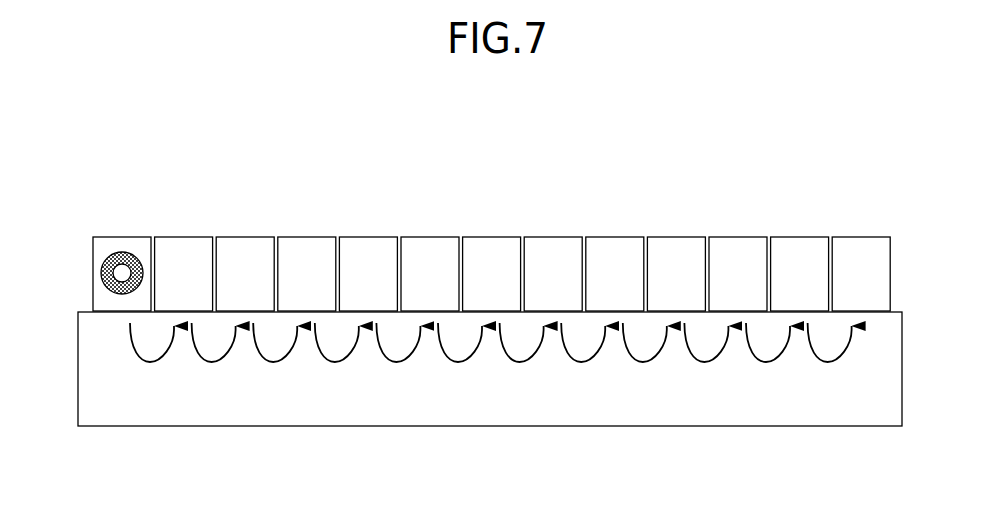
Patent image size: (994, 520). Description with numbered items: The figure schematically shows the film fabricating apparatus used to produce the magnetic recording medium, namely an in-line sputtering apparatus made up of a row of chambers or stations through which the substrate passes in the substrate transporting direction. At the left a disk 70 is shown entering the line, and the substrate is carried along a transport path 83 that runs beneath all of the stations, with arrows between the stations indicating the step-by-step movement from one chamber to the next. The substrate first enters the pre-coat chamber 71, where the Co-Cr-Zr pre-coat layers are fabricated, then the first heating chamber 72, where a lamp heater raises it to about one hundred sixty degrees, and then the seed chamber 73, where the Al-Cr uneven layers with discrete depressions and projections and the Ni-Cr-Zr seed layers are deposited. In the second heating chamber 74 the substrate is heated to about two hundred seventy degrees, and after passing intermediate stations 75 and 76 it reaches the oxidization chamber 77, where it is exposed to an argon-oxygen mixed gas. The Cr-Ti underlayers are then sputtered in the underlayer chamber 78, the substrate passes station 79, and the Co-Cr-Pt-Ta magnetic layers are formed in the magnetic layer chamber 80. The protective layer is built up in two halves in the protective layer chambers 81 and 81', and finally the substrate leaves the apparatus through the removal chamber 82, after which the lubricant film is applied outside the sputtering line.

The substrate (disk) 70 is at (112, 268).
The pre-coat chamber 71 is at (122, 236).
The first heating chamber 72 is at (184, 236).
The seed chamber 73 is at (245, 236).
The second heating chamber 74 is at (307, 236).
The processing chamber 75 is at (368, 236).
The processing chamber 76 is at (430, 236).
The oxidization chamber 77 is at (492, 236).
The underlayer chamber 78 is at (553, 236).
The processing chamber 79 is at (615, 236).
The magnetic layer chamber 80 is at (676, 236).
The protective layer chamber 81 is at (768, 230).
The protective layer chamber 81' is at (834, 230).
The removal chamber 82 is at (861, 236).
The substrate transport path 83 is at (843, 398).